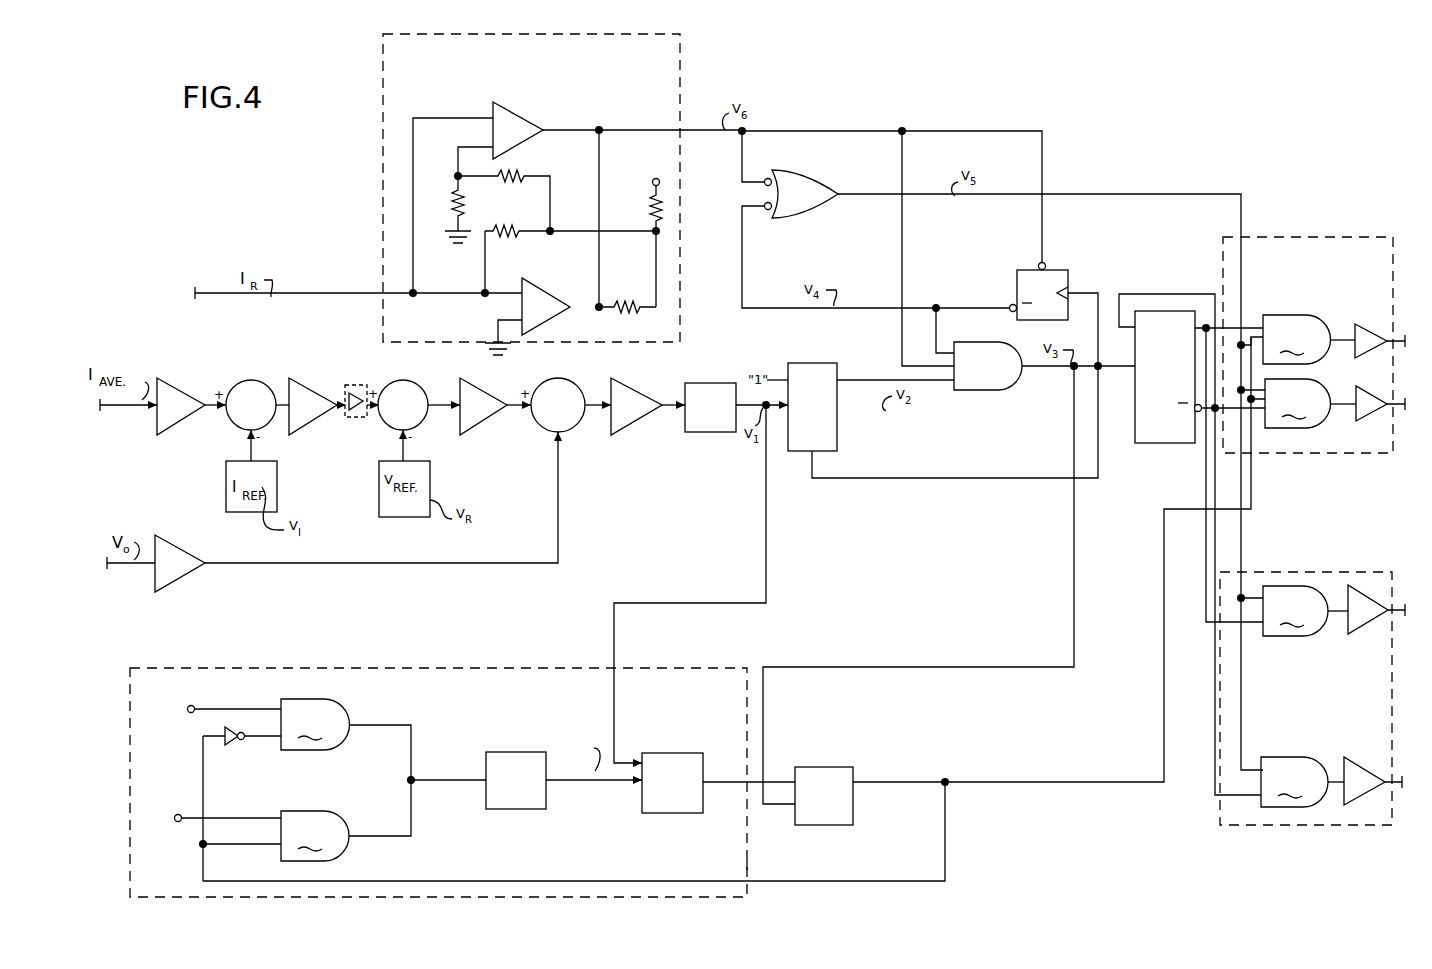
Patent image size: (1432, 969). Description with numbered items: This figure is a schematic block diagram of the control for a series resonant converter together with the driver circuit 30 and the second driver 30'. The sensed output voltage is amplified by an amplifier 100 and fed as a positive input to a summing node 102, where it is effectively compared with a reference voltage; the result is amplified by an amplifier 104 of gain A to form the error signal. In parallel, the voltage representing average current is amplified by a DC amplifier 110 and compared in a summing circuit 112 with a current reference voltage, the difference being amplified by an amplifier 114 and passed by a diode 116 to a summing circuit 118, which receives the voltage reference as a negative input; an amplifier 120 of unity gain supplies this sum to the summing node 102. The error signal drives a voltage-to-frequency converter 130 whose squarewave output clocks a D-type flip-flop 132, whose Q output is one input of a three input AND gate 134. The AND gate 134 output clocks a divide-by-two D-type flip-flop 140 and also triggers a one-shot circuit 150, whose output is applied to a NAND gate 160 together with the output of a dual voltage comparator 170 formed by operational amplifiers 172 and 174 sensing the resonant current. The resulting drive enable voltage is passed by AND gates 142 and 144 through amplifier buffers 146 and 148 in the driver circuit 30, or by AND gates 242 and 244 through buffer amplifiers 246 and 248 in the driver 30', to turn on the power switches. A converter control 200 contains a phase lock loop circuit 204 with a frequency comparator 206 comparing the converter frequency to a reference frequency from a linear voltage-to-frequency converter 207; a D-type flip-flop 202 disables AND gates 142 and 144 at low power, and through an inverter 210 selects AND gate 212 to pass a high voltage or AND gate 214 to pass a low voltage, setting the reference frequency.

The driver circuit 30 is at (1314, 320).
The driver 30' is at (1277, 701).
The amplifier 100 is at (177, 563).
The summing node 102 is at (573, 418).
The amplifier 104 is at (625, 420).
The DC amplifier 110 is at (171, 396).
The summing circuit 112 is at (252, 394).
The amplifier 114 is at (318, 396).
The diode 116 is at (354, 419).
The summing circuit 118 is at (408, 394).
The amplifier 120 is at (487, 418).
The voltage-to-frequency converter 130 is at (716, 431).
The D-type flip-flop 132 is at (832, 421).
The AND gate 134 is at (1003, 388).
The D-type flip-flop 140 is at (1143, 446).
The AND gate 142 is at (1297, 339).
The AND gate 144 is at (1298, 403).
The amplifier buffer 146 is at (1371, 325).
The amplifier buffer 148 is at (1372, 413).
The one-shot circuit 150 is at (1057, 298).
The NAND gate 160 is at (807, 186).
The dual voltage comparator 170 is at (562, 193).
The operational amplifier 172 is at (521, 122).
The operational amplifier 174 is at (541, 302).
The converter control 200 is at (514, 663).
The D-type flip-flop 202 is at (836, 813).
The phase lock loop circuit 204 is at (748, 866).
The frequency comparator 206 is at (690, 752).
The voltage-to-frequency converter 207 is at (533, 801).
The inverter 210 is at (232, 750).
The AND gate 212 is at (315, 724).
The AND gate 214 is at (315, 836).
The AND gate 242 is at (1295, 611).
The AND gate 244 is at (1294, 782).
The buffer amplifier 246 is at (1363, 618).
The buffer amplifier 248 is at (1359, 778).